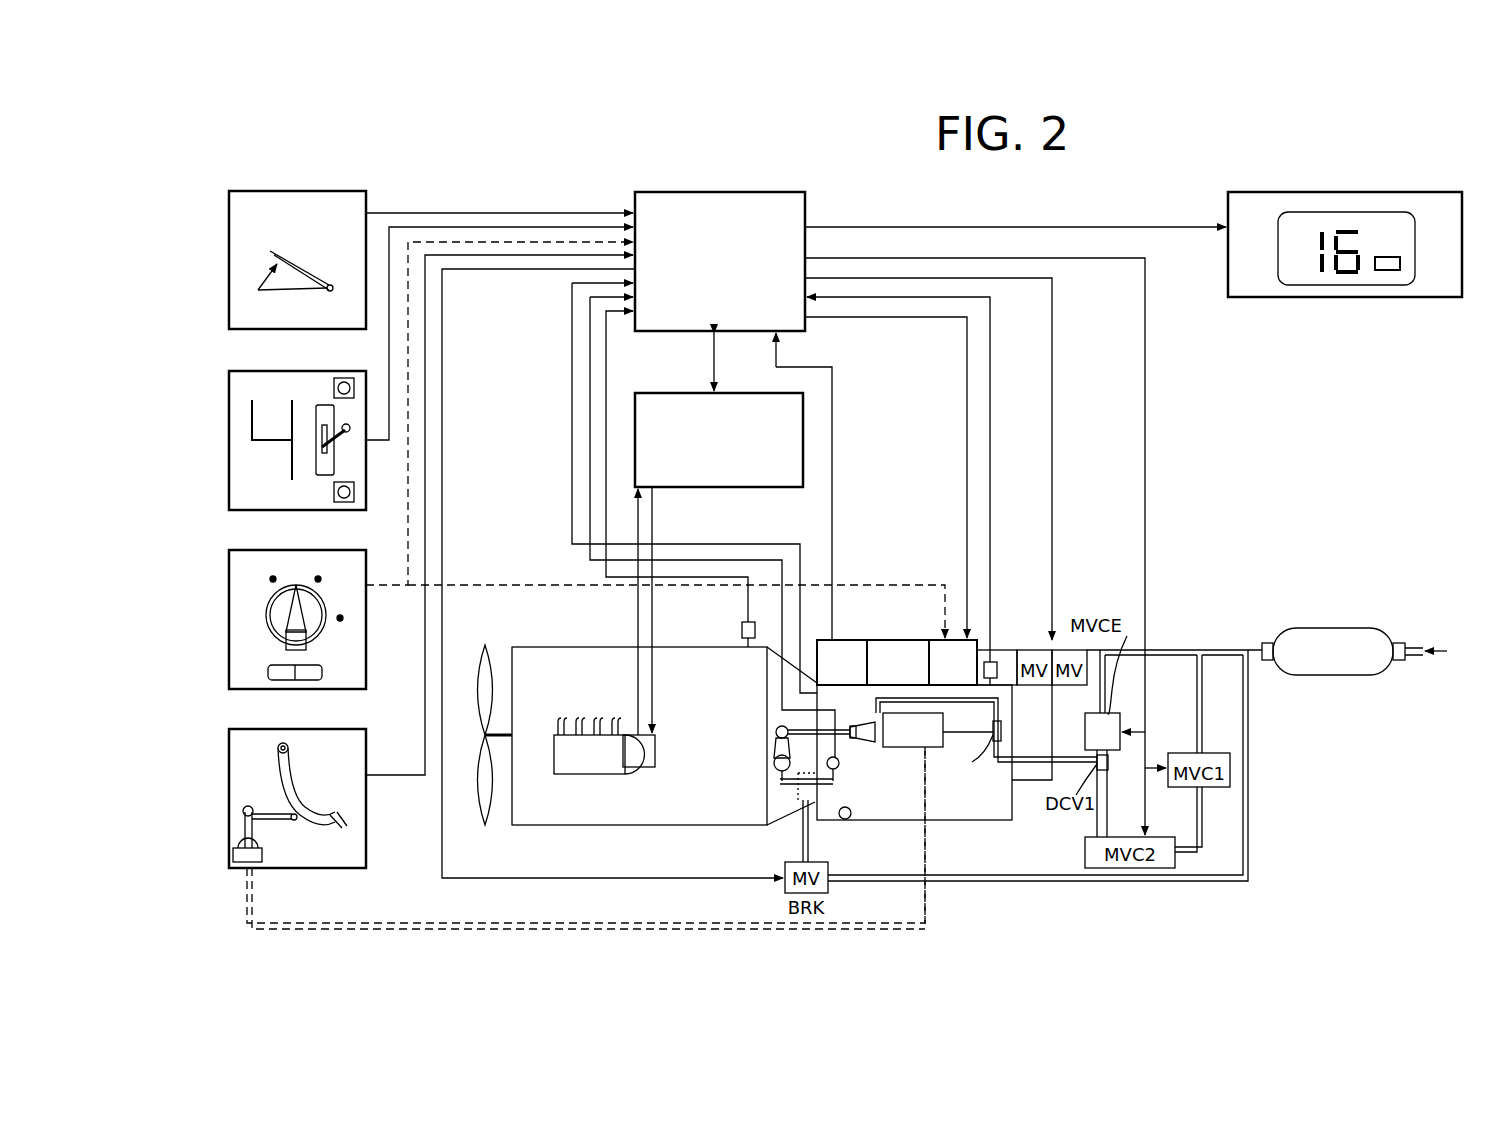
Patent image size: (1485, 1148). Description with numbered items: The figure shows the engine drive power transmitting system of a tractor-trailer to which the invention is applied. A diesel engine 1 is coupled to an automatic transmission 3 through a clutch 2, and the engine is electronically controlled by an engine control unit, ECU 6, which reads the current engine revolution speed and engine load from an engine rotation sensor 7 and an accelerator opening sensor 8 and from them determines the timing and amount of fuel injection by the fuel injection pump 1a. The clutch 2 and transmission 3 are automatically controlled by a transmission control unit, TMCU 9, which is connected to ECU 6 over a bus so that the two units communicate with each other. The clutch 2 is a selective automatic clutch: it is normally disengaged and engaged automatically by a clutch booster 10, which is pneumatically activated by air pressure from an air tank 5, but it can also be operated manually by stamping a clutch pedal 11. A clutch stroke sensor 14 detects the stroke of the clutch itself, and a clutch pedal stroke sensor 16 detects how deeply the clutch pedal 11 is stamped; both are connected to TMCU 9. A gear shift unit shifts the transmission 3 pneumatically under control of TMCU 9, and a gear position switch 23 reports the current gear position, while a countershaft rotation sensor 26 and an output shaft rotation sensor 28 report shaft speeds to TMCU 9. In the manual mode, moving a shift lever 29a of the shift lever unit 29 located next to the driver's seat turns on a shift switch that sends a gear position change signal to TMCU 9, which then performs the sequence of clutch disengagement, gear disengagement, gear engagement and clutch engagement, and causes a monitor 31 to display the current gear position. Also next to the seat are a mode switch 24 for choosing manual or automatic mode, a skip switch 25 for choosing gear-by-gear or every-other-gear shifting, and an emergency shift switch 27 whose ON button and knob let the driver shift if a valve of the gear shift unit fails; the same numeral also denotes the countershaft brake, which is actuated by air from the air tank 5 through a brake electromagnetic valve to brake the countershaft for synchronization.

The diesel engine 1 is at (623, 711).
The fuel injection pump 1a is at (590, 774).
The clutch 2 is at (778, 828).
The automatic transmission 3 is at (938, 807).
The air tank 5 is at (1335, 628).
The engine control unit (ECU) 6 is at (676, 393).
The engine rotation sensor 7 is at (742, 628).
The accelerator opening sensor 8 is at (229, 258).
The transmission control unit (TMCU) 9 is at (740, 192).
The clutch booster 10 is at (908, 748).
The clutch pedal 11 is at (302, 818).
The clutch stroke sensor 14 is at (840, 768).
The clutch pedal stroke sensor 16 is at (274, 798).
The gear position switch 23 is at (840, 640).
The mode switch 24 is at (352, 362).
The skip switch 25 is at (338, 502).
The countershaft rotation sensor 26 is at (850, 818).
The emergency shift switch 27 is at (229, 618).
The output shaft rotation sensor 28 is at (997, 665).
The shift lever unit 29 is at (284, 438).
The shift lever 29a is at (350, 437).
The monitor 31 is at (1330, 285).